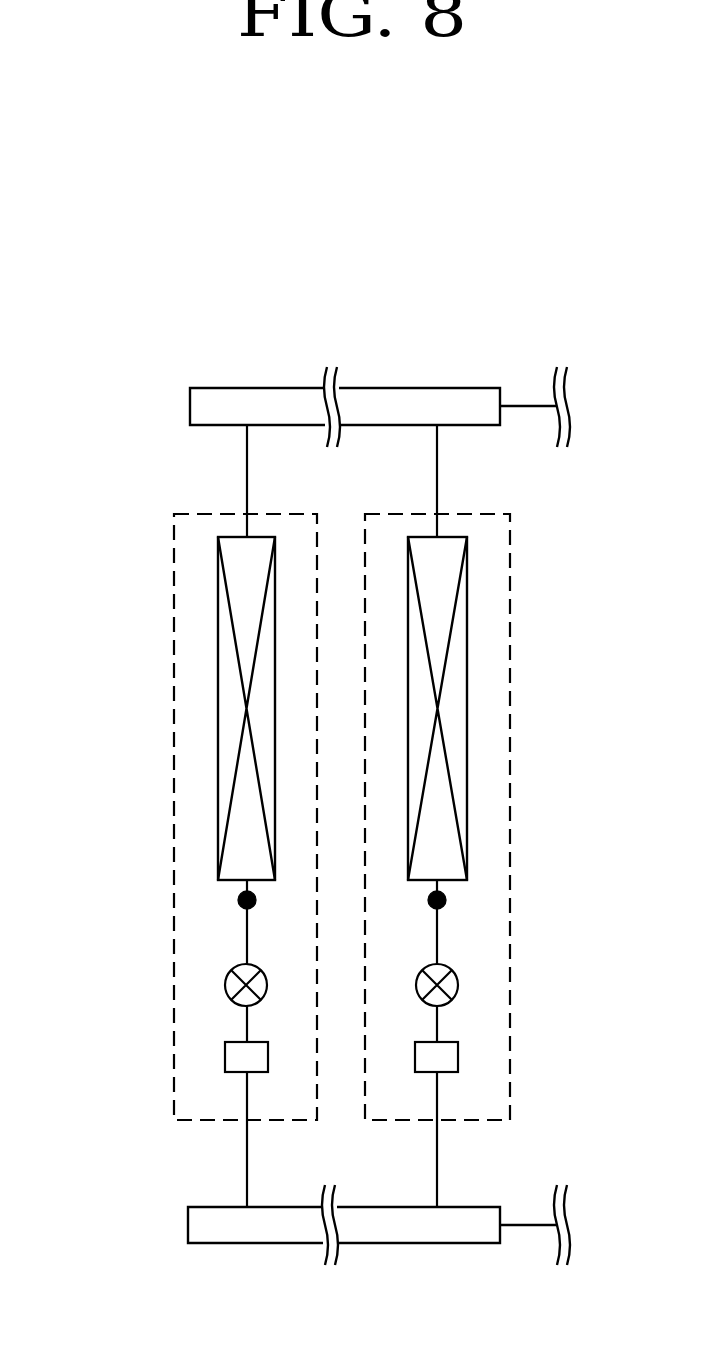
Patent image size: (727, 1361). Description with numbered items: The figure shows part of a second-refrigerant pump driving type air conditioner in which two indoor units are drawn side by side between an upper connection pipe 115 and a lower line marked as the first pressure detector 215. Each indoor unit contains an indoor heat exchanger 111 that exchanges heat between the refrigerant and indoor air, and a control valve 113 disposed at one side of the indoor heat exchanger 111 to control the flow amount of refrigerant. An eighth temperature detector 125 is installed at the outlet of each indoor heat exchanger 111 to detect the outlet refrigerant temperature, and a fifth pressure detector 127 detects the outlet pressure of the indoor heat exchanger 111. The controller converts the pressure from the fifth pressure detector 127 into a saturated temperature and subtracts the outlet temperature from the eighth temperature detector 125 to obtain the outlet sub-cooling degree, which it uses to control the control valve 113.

The connection pipe 115 is at (218, 388).
The indoor heat exchanger 111 is at (433, 637).
The eighth temperature detector 125 is at (430, 893).
The control valve 113 is at (417, 978).
The fifth pressure detector 127 is at (430, 1054).
The first pressure detector 215 is at (220, 1243).